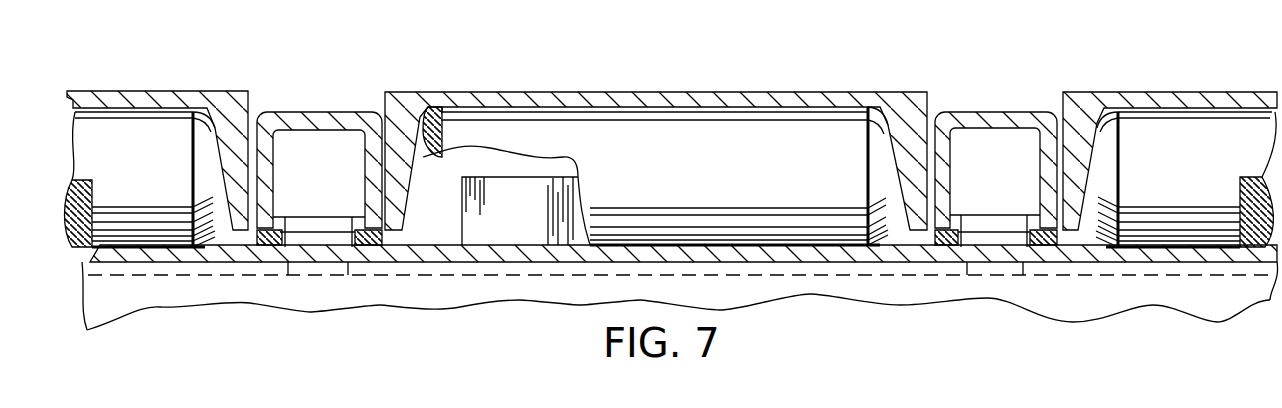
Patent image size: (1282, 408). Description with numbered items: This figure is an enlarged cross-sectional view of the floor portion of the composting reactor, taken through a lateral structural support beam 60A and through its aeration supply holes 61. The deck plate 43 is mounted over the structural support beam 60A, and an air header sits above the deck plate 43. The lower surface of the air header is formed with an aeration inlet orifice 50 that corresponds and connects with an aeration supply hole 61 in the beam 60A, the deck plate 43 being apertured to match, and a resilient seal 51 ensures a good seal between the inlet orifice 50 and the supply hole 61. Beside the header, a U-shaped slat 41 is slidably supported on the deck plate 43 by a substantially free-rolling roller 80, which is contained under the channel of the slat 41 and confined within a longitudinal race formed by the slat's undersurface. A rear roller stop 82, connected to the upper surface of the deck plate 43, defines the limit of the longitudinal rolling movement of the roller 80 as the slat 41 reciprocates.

The slat 41 is at (713, 97).
The deck plate 43 is at (198, 252).
The aeration inlet orifice 50 is at (352, 220).
The resilient seal 51 is at (250, 238).
The lateral structural support beam 60A is at (833, 292).
The aeration supply hole 61 is at (352, 262).
The roller 80 is at (667, 153).
The rear roller stop 82 is at (462, 183).